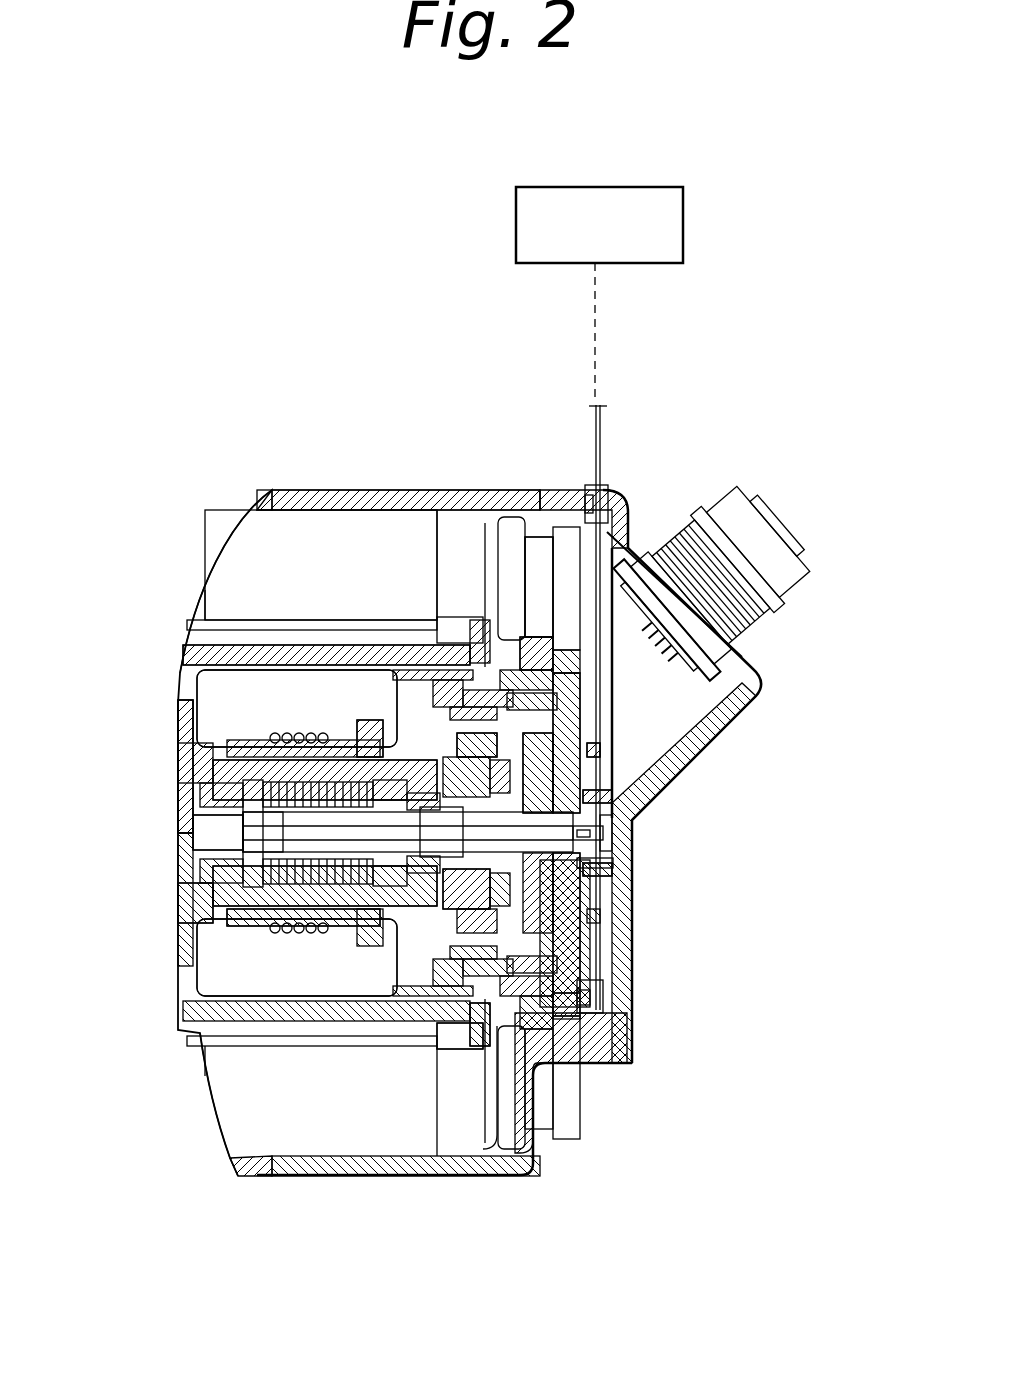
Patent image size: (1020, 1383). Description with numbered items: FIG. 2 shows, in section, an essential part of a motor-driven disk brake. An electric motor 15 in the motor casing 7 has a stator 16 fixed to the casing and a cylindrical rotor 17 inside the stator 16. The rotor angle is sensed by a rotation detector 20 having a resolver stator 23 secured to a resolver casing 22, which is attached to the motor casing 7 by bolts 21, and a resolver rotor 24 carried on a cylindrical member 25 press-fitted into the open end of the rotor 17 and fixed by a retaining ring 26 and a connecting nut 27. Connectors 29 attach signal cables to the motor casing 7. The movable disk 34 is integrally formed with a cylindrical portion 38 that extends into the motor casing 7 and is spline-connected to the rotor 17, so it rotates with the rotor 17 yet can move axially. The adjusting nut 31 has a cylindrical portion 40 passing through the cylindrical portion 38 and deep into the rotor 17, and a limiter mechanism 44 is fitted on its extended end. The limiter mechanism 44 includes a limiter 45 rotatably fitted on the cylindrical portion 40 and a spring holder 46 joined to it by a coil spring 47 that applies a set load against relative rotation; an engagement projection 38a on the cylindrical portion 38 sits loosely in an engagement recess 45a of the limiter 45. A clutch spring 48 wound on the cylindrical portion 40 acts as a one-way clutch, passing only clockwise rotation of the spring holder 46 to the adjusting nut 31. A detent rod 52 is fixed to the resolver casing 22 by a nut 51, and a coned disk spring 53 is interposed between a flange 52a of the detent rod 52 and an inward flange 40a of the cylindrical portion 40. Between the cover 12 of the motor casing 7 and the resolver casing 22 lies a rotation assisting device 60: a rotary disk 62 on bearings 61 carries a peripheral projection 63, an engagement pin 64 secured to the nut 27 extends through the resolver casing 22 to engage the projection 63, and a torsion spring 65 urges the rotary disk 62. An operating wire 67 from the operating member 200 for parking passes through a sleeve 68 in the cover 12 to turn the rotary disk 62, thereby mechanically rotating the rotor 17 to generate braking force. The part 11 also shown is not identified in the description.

The operating member for parking 200 is at (690, 228).
The motor casing 7 is at (326, 472).
The lower housing 11 is at (520, 1165).
The cover 12 is at (632, 1030).
The electric motor 15 is at (233, 505).
The stator 16 is at (347, 533).
The rotor 17 is at (290, 648).
The rotation detector 20 is at (540, 640).
The bolts 21 is at (628, 1032).
The resolver casing 22 is at (572, 685).
The resolver stator 23 is at (520, 770).
The resolver rotor 24 is at (470, 1092).
The cylindrical member 25 is at (480, 720).
The retaining ring 26 is at (438, 1085).
The nut 27 is at (510, 745).
The connectors 29 is at (727, 520).
The adjusting nut 31 is at (325, 1026).
The movable disk 34 is at (120, 766).
The cylindrical portion 38 is at (182, 733).
The engagement projection 38a is at (205, 668).
The cylindrical portion 40 is at (303, 920).
The inward flange 40a is at (270, 830).
The limiter mechanism 44 is at (243, 935).
The limiter 45 is at (232, 915).
The engagement recess 45a is at (250, 735).
The spring holder 46 is at (370, 720).
The coil spring 47 is at (280, 960).
The clutch spring 48 is at (392, 1000).
The nut 51 is at (565, 930).
The detent rod 52 is at (330, 928).
The flange 52a is at (272, 838).
The coned disk spring 53 is at (330, 950).
The rotation assisting device 60 is at (630, 833).
The bearings 61 is at (605, 803).
The rotary disk 62 is at (618, 882).
The projection 63 is at (612, 958).
The engagement pin 64 is at (610, 1000).
The torsion spring 65 is at (618, 820).
The operating wire 67 is at (602, 440).
The sleeve 68 is at (608, 495).